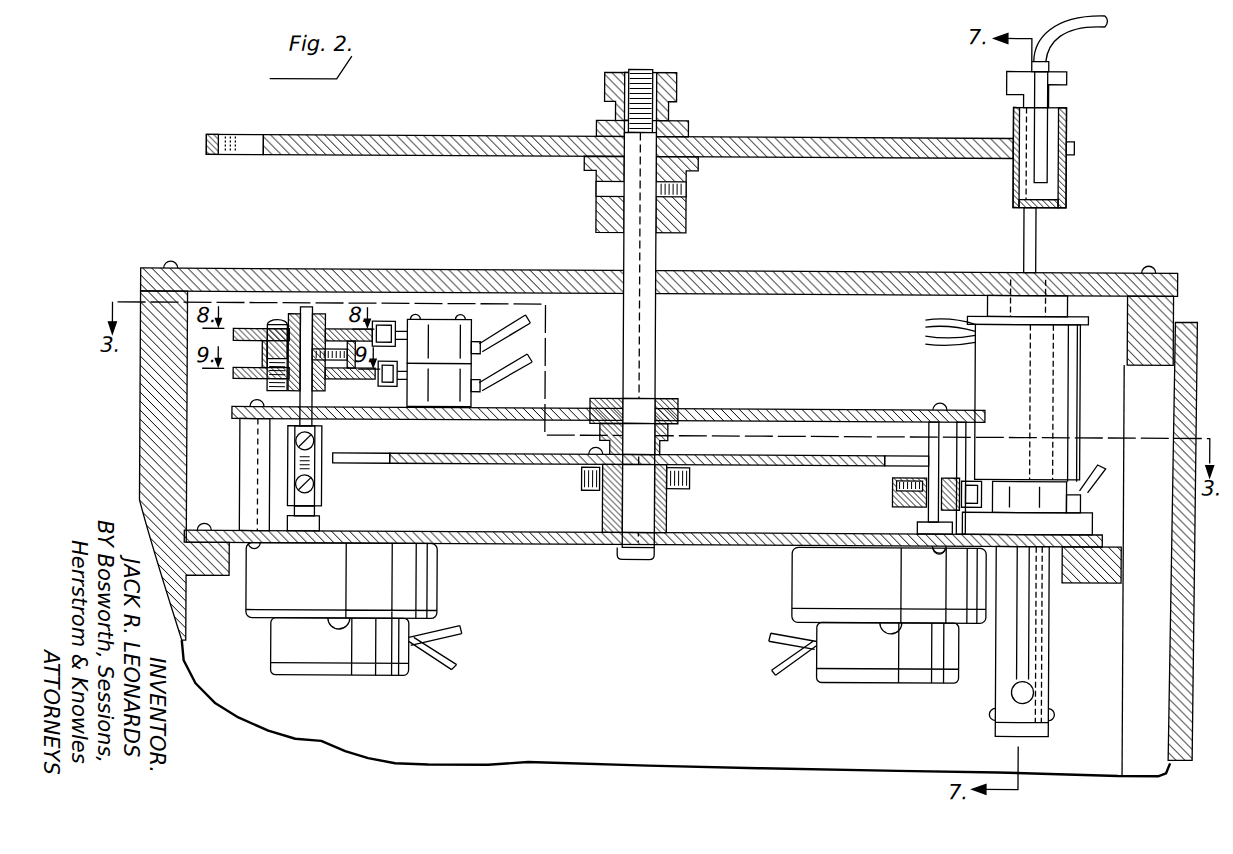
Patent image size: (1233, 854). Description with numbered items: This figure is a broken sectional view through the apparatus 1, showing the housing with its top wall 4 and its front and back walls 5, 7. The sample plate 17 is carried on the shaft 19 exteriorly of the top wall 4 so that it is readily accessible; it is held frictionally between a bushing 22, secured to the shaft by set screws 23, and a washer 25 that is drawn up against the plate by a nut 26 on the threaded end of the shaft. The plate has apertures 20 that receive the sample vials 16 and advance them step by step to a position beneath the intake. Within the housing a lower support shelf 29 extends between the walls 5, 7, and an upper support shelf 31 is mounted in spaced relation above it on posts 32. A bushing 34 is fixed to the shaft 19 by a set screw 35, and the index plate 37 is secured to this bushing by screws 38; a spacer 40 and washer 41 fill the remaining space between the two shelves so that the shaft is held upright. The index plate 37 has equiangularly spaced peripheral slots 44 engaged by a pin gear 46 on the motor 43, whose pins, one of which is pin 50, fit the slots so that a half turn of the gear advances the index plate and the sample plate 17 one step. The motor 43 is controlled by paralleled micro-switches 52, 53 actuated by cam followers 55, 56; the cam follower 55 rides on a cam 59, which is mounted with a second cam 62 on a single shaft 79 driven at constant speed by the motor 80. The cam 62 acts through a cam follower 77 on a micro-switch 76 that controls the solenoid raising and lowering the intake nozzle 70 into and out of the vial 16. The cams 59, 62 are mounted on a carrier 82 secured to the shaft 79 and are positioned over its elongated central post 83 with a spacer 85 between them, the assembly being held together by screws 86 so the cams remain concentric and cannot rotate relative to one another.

The apparatus 1 is at (1090, 272).
The top wall 4 is at (317, 313).
The front wall 5 is at (1162, 312).
The back wall 7 is at (142, 401).
The sample vial 16 is at (1068, 118).
The sample plate 17 is at (385, 134).
The shaft 19 is at (656, 246).
The apertures 20 is at (247, 134).
The bushing 22 is at (688, 214).
The set screws 23 is at (688, 188).
The washer 25 is at (690, 130).
The nut 26 is at (678, 88).
The lower support shelf 29 is at (522, 545).
The upper support shelf 31 is at (843, 406).
The posts 32 is at (246, 446).
The bushing 34 is at (668, 511).
The set screw 35 is at (692, 480).
The index plate 37 is at (455, 465).
The screws 38 is at (582, 480).
The spacer 40 is at (670, 446).
The washer 41 is at (690, 423).
The motor 43 is at (878, 615).
The slots 44 is at (355, 462).
The pin gear 46 is at (893, 502).
The pin 50 is at (942, 448).
The micro-switch 52 is at (410, 382).
The micro-switch 53 is at (1002, 494).
The cam follower 55 is at (390, 388).
The cam follower 56 is at (973, 483).
The cam 59 is at (240, 375).
The cam 62 is at (250, 328).
The intake nozzle 70 is at (1048, 175).
The micro-switch 76 is at (410, 340).
The cam follower 77 is at (385, 322).
The shaft 79 is at (312, 306).
The motor 80 is at (354, 609).
The carrier 82 is at (325, 418).
The central post 83 is at (313, 328).
The spacer 85 is at (262, 353).
The screws 86 is at (277, 320).